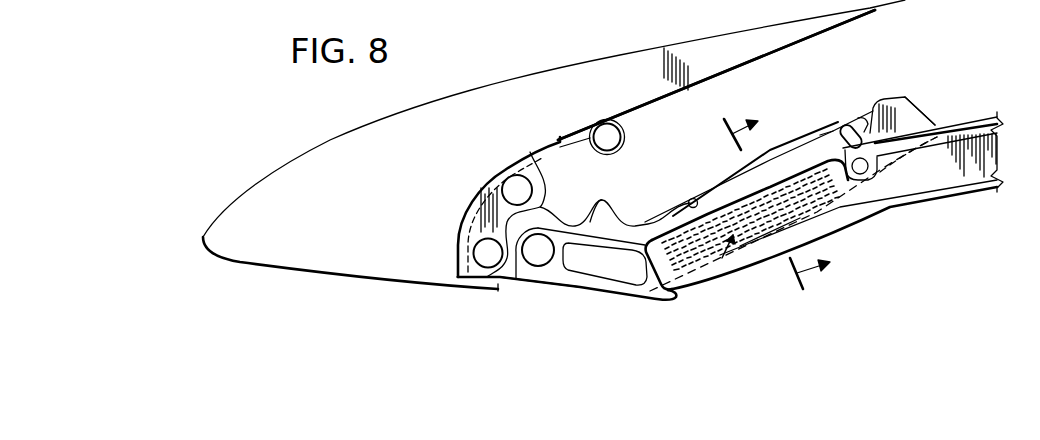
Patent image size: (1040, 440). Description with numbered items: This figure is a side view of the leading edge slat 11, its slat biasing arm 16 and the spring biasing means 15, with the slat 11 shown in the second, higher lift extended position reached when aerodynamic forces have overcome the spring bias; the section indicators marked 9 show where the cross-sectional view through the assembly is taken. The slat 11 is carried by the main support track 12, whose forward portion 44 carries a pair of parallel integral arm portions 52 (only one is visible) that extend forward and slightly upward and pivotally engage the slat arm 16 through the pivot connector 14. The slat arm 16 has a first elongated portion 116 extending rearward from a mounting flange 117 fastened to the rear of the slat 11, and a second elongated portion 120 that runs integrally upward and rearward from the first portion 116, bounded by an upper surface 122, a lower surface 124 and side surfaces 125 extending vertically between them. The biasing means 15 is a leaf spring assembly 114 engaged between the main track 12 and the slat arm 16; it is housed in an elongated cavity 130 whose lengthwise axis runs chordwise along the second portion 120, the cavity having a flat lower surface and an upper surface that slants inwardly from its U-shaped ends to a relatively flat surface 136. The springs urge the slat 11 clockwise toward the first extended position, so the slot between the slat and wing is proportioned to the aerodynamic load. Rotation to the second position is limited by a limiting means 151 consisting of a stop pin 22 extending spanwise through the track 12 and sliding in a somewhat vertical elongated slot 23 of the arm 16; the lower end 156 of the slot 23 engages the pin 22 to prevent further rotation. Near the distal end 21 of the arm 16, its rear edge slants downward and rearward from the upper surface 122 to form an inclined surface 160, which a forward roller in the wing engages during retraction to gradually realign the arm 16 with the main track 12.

The leading edge slat 11 is at (312, 152).
The main support track 12 is at (945, 178).
The pivot connector 14 is at (543, 258).
The spring biasing means 15 is at (728, 272).
The slat biasing arm 16 is at (600, 198).
The distal end 21 is at (930, 112).
The stop pin 22 is at (862, 176).
The slot 23 is at (852, 122).
The forward portion 44 is at (654, 298).
The arm portion 52 is at (616, 289).
The leaf spring assembly 114 is at (718, 252).
The first elongated portion 116 is at (515, 272).
The mounting flange 117 is at (458, 268).
The second elongated portion 120 is at (805, 141).
The upper surface 122 is at (692, 201).
The lower surface 124 is at (767, 237).
The side surfaces 125 is at (830, 130).
The elongated cavity 130 is at (727, 188).
The flat surface 136 is at (688, 206).
The limiting means 151 is at (864, 115).
The lower end 156 is at (878, 181).
The inclined surface 160 is at (928, 97).
The section line 9- 9 is at (784, 197).